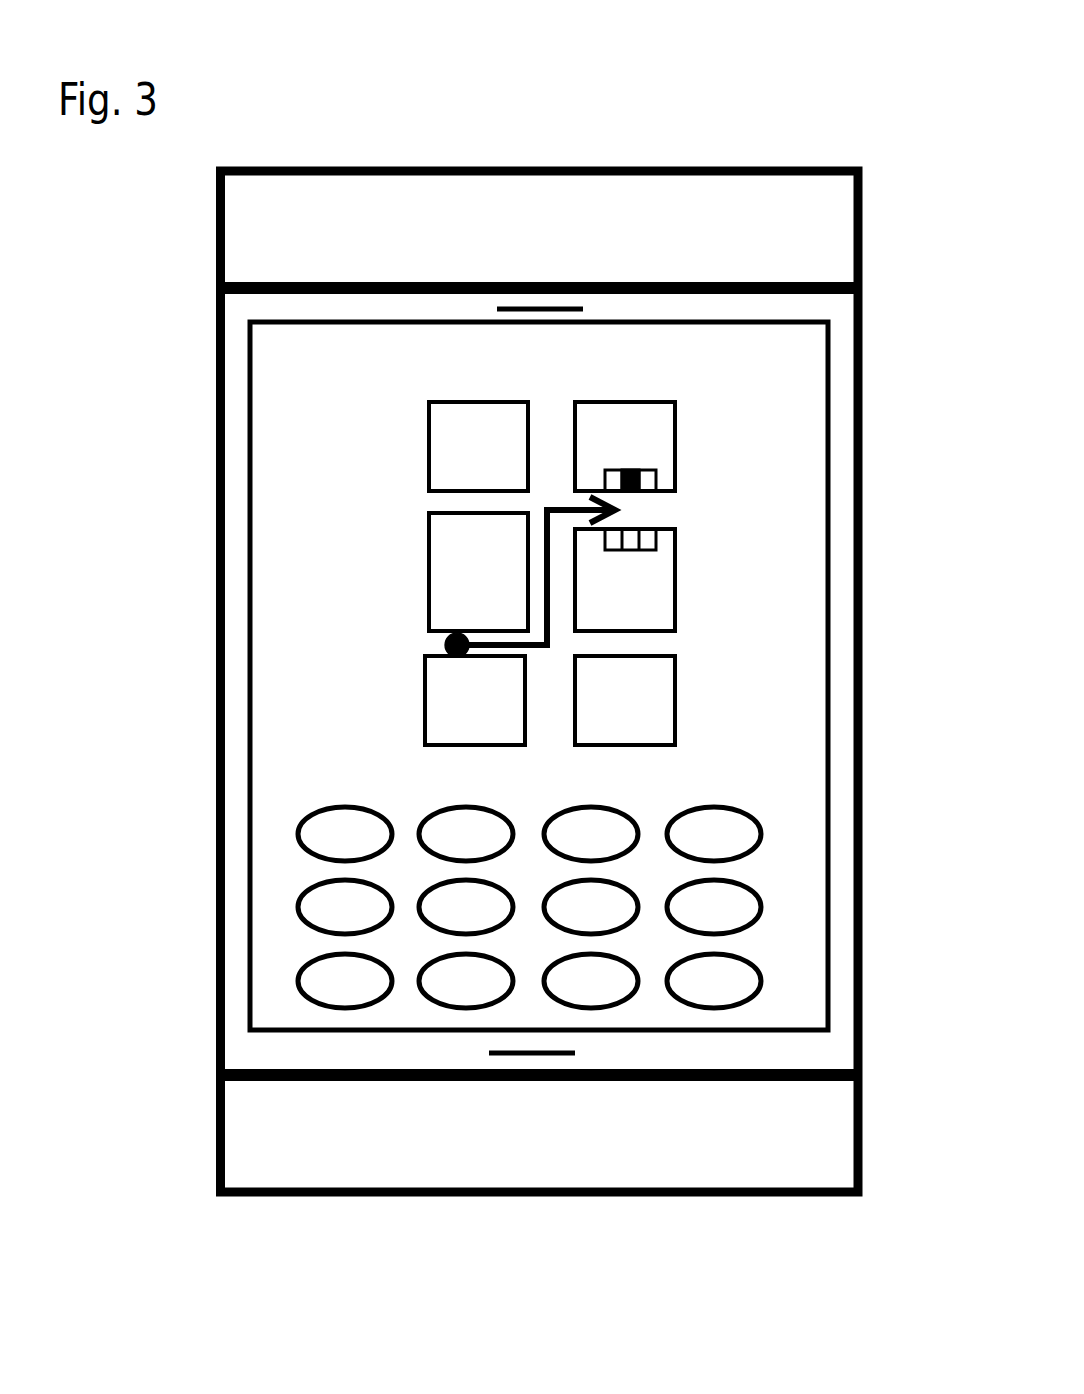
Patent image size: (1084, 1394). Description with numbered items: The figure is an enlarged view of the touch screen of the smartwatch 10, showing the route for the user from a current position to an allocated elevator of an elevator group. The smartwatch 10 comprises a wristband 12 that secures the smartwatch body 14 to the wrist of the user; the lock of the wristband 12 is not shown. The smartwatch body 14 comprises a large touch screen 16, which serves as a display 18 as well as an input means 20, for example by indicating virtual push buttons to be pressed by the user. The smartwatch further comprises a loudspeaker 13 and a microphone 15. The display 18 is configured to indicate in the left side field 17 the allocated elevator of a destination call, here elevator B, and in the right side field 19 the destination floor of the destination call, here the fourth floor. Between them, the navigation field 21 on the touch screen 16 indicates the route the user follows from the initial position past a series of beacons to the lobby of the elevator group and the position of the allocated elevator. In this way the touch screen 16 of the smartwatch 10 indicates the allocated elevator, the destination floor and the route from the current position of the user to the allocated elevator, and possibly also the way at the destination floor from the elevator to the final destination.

The smartwatch 10 is at (783, 122).
The wristband 12 is at (362, 205).
The loudspeaker 13 is at (548, 308).
The smartwatch body 14 is at (207, 517).
The microphone 15 is at (540, 1055).
The touch screen 16 is at (288, 512).
The field 17 is at (317, 595).
The display 18 is at (762, 418).
The field 19 is at (772, 580).
The input means 20 is at (773, 832).
The navigation field 21 is at (387, 682).